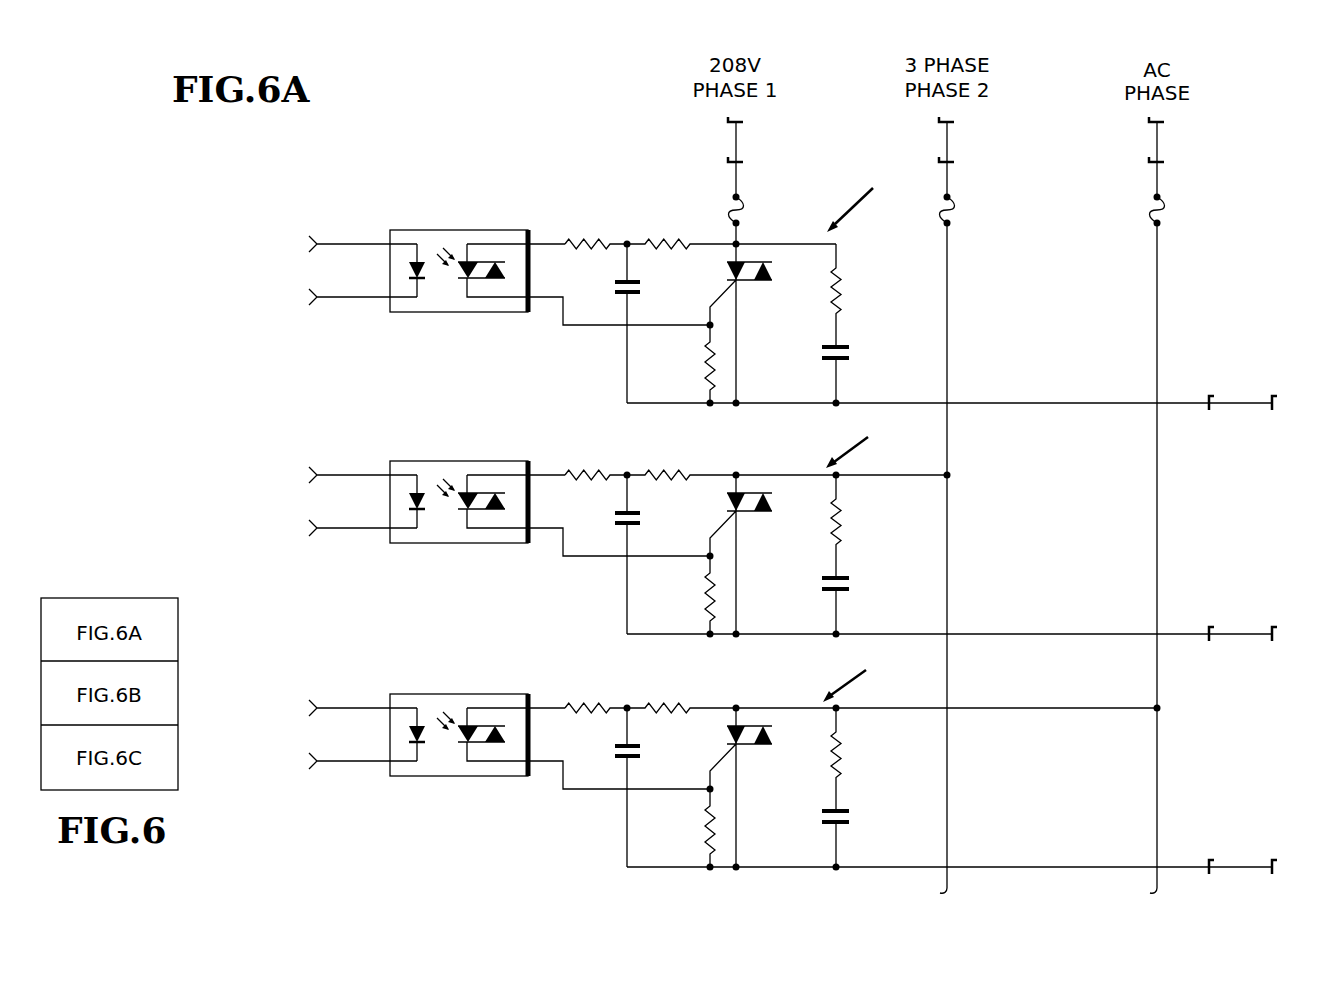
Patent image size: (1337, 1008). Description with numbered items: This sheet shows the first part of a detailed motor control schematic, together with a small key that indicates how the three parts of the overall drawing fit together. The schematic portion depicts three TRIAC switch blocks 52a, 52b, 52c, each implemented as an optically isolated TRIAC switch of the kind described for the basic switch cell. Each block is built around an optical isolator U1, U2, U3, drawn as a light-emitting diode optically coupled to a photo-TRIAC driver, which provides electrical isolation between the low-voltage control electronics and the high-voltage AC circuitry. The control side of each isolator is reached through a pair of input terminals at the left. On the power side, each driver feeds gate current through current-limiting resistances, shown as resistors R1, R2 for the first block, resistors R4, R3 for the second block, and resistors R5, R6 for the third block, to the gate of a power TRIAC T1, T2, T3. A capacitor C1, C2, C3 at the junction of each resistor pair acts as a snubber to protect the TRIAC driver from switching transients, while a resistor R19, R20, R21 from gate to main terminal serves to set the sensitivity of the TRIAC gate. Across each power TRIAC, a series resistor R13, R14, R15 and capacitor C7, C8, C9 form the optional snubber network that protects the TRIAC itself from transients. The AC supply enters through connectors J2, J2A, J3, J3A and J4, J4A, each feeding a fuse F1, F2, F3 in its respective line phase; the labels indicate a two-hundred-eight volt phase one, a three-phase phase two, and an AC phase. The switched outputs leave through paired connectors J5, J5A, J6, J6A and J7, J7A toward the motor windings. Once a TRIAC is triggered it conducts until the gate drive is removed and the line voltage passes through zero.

The TRIAC switch block 52a is at (820, 202).
The TRIAC switch block 52b is at (841, 444).
The TRIAC switch block 52c is at (946, 677).
The optocoupler U1 is at (550, 262).
The optocoupler U2 is at (550, 493).
The optocoupler U3 is at (550, 726).
The resistor R1 is at (596, 231).
The resistor R2 is at (681, 231).
The resistor R3 is at (681, 462).
The resistor R4 is at (596, 462).
The resistor R5 is at (596, 695).
The resistor R6 is at (681, 695).
The snubber resistor R13 is at (859, 295).
The snubber resistor R14 is at (859, 526).
The snubber resistor R15 is at (859, 759).
The gate resistor R19 is at (684, 364).
The gate resistor R20 is at (684, 595).
The gate resistor R21 is at (684, 828).
The capacitor C1 is at (614, 323).
The capacitor C2 is at (614, 554).
The capacitor C3 is at (614, 787).
The snubber capacitor C7 is at (857, 370).
The snubber capacitor C8 is at (857, 601).
The snubber capacitor C9 is at (857, 834).
The triac T1 is at (757, 323).
The triac T2 is at (757, 554).
The triac T3 is at (757, 787).
The fuse F1 is at (755, 219).
The fuse F2 is at (967, 544).
The fuse F3 is at (1176, 544).
The connector J2 is at (749, 138).
The connector J2A is at (756, 177).
The connector J3 is at (961, 138).
The connector J3A is at (968, 177).
The connector J4 is at (1170, 138).
The connector J4A is at (1177, 177).
The connector J5 is at (1266, 415).
The connector J5A is at (949, 415).
The connector J6 is at (1266, 647).
The connector J6A is at (949, 656).
The connector J7 is at (1266, 880).
The connector J7A is at (949, 880).